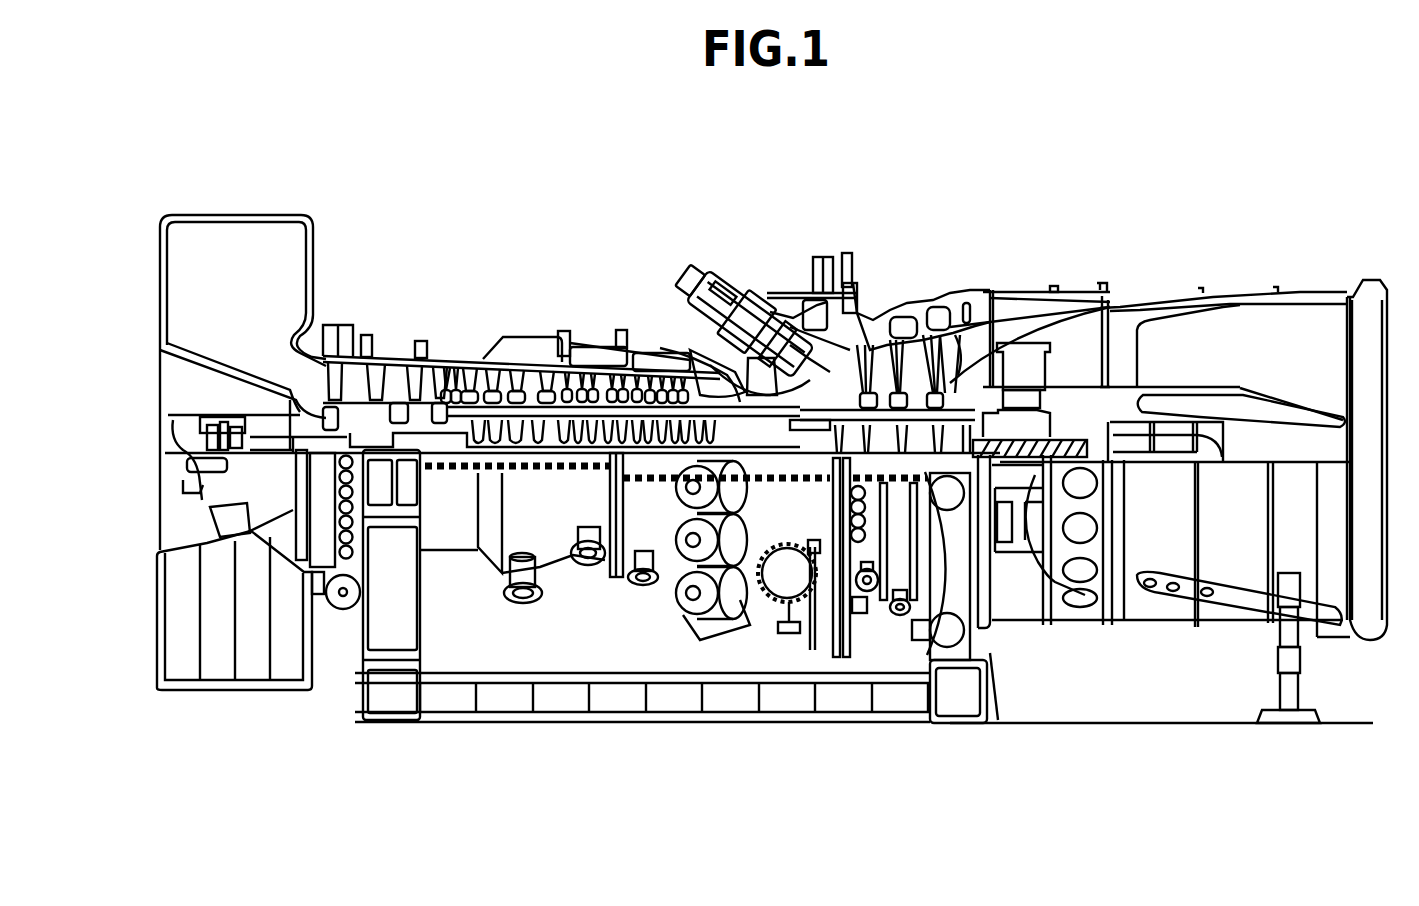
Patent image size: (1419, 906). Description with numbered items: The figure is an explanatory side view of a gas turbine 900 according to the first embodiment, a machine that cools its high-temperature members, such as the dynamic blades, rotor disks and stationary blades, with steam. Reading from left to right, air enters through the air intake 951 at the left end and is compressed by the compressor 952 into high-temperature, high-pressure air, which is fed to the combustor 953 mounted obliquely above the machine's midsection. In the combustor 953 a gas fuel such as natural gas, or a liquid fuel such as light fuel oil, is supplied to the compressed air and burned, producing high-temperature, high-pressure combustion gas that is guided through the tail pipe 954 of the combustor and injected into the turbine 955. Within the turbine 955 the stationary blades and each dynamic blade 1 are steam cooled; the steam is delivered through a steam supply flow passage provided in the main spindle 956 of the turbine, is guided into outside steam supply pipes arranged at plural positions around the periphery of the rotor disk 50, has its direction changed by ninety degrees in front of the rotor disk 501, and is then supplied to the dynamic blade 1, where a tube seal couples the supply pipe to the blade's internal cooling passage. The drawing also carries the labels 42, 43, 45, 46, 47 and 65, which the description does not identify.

The gas turbine 900 is at (1074, 208).
The air intake 951 is at (229, 253).
The compressor 952 is at (462, 352).
The combustor 953 is at (760, 280).
The tail pipe 954 is at (723, 365).
The turbine 955 is at (905, 300).
The main spindle 956 is at (1112, 585).
The dynamic blade 1 is at (760, 293).
The turbine stator blade 42 is at (975, 417).
The turbine casing 43 is at (1057, 297).
The combustor casing 45 is at (833, 257).
The turbine rotor blade 46 is at (950, 370).
The transition piece 47 is at (855, 305).
The rotor disk 50 is at (848, 625).
The piping 65 is at (880, 600).
The rotor disk 501 is at (945, 615).